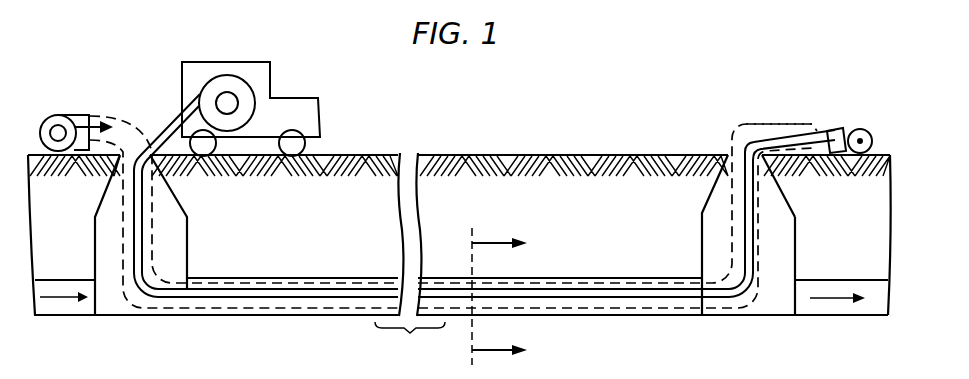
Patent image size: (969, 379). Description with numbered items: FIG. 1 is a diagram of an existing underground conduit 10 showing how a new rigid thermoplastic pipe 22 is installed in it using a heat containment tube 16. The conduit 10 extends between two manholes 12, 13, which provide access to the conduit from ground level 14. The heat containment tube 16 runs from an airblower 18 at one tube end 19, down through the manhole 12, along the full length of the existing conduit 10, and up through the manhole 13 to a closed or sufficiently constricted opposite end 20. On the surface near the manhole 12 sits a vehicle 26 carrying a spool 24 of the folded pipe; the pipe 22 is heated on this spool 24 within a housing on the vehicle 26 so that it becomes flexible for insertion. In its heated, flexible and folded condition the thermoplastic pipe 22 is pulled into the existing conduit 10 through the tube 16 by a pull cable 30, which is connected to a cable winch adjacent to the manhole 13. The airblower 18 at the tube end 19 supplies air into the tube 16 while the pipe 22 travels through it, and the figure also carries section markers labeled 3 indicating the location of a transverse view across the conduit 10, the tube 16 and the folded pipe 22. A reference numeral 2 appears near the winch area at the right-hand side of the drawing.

The winch pulley 2 is at (858, 128).
The section line 3- 3 is at (510, 299).
The existing underground conduit 10 is at (288, 278).
The manhole 12 is at (188, 238).
The manhole 13 is at (702, 228).
The ground level 14 is at (345, 156).
The heat containment tube 16 is at (250, 278).
The airblower 18 is at (62, 114).
The tube end 19 is at (92, 112).
The opposite end 20 is at (820, 124).
The rigid thermoplastic pipe 22 is at (158, 125).
The spool 24 is at (250, 80).
The vehicle 26 is at (308, 97).
The pull cable 30 is at (840, 163).